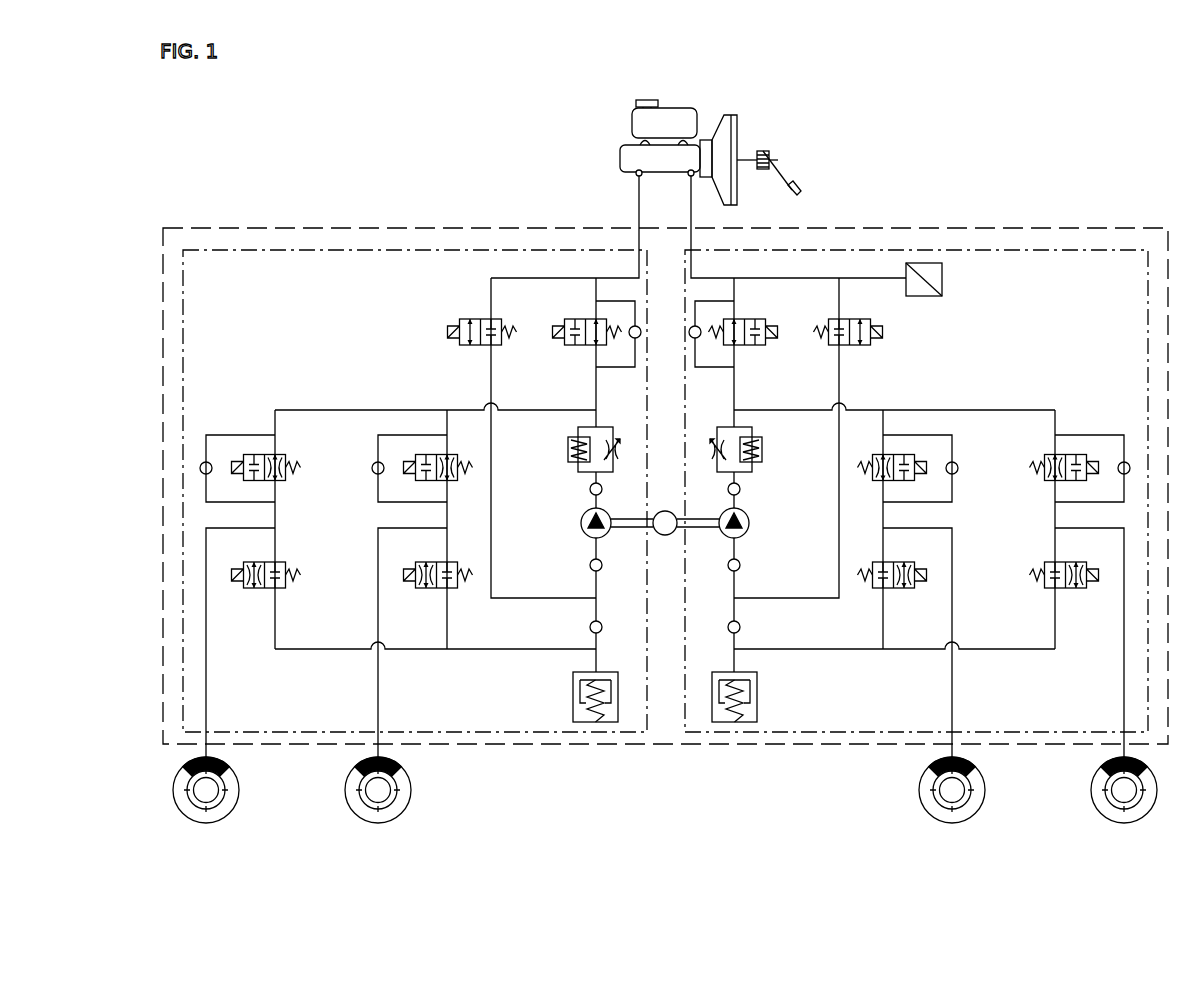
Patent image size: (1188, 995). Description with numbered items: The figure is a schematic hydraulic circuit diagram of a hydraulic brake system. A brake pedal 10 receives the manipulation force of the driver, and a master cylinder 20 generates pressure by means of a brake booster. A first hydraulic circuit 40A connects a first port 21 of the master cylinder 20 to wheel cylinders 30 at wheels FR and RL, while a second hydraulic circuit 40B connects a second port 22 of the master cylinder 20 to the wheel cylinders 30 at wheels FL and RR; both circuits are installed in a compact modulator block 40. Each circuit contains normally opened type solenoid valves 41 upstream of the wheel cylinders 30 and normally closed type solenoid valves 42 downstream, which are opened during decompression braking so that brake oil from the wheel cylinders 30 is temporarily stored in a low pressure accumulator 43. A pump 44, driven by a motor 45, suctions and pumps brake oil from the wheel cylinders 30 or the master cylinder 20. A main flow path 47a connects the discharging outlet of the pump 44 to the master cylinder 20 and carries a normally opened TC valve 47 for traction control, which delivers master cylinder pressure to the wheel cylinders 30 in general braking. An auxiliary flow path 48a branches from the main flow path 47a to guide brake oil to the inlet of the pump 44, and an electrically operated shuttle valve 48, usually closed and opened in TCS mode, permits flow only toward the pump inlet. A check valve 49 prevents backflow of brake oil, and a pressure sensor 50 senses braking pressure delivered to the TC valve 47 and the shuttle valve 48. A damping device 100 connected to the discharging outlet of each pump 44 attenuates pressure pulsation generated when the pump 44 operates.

The brake pedal 10 is at (772, 150).
The master cylinder 20 is at (620, 160).
The first port 21 is at (691, 180).
The second port 22 is at (639, 180).
The wheel cylinders 30 is at (181, 786).
The modulator block 40 is at (487, 228).
The first hydraulic circuit 40A is at (983, 250).
The second hydraulic circuit 40B is at (410, 250).
The normally opened type solenoid valve 41 is at (268, 481).
The normally closed type solenoid valve 42 is at (268, 589).
The low pressure accumulator 43 is at (573, 690).
The pump 44 is at (580, 523).
The motor 45 is at (666, 535).
The TC valve 47 is at (578, 318).
The main flow path 47a is at (596, 380).
The shuttle valve 48 is at (470, 318).
The auxiliary flow path 48a is at (491, 378).
The check valve 49 is at (602, 626).
The pressure sensor 50 is at (942, 280).
The damping device 100 is at (574, 445).